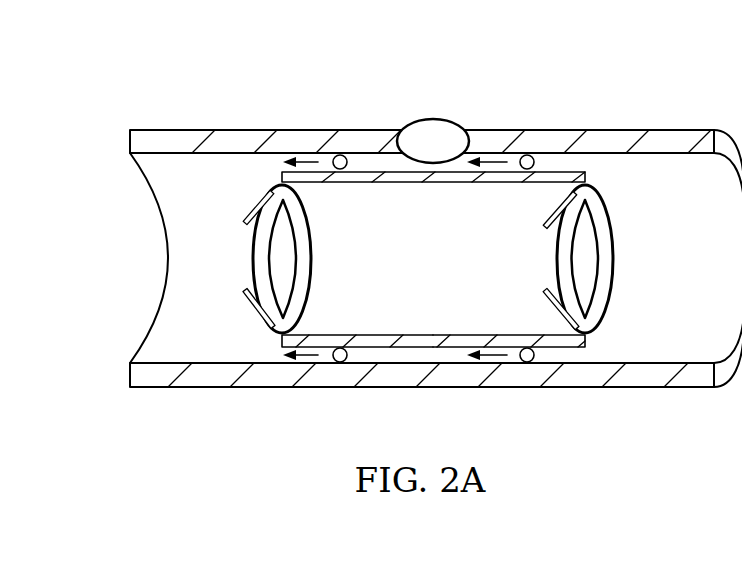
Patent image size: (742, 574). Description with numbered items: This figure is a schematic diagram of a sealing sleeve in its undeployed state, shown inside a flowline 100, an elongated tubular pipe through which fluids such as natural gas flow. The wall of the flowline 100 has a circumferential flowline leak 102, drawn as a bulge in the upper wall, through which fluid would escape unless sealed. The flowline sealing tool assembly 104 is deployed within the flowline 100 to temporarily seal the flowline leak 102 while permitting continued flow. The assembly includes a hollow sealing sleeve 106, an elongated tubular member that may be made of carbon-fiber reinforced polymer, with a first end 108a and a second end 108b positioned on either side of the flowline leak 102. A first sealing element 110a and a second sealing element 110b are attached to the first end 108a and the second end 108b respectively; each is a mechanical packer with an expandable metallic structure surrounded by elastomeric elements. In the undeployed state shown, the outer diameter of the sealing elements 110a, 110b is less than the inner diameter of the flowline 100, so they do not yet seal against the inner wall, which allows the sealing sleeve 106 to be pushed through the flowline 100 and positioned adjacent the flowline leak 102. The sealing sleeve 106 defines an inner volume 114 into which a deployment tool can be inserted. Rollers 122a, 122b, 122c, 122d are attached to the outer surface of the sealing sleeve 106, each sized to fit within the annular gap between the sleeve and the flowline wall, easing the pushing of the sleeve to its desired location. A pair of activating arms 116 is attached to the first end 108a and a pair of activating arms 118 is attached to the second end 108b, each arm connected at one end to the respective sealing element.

The flowline 100 is at (436, 225).
The flowline leak 102 is at (433, 119).
The flowline sealing tool assembly 104 is at (592, 112).
The sealing sleeve 106 is at (390, 172).
The first end 108a is at (282, 348).
The second end 108b is at (586, 344).
The first sealing element 110a is at (313, 262).
The second sealing element 110b is at (613, 260).
The inner volume 114 is at (455, 272).
The activating arms 116 is at (256, 209).
The activating arms 118 is at (552, 211).
The roller 122a is at (527, 155).
The roller 122b is at (341, 155).
The roller 122c is at (340, 362).
The roller 122d is at (527, 362).